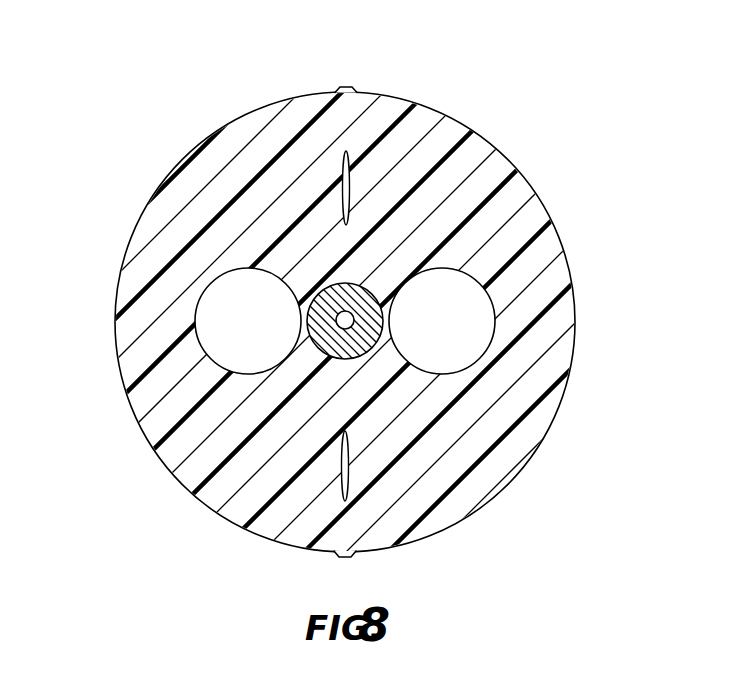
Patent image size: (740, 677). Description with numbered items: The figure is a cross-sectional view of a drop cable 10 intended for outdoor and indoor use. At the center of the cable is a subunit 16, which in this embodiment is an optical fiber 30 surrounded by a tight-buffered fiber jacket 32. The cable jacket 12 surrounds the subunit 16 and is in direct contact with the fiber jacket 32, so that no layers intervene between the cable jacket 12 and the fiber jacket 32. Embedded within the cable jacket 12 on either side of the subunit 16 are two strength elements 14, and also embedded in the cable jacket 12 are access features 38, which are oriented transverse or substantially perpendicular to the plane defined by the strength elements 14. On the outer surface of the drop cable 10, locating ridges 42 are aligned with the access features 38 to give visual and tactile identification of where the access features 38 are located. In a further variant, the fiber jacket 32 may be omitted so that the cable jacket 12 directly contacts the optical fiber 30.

The drop cable 10 is at (370, 338).
The cable jacket 12 is at (448, 130).
The strength elements 14 is at (210, 313).
The subunit 16 is at (370, 338).
The optical fiber 30 is at (353, 320).
The fiber jacket 32 is at (367, 340).
The access features 38 is at (345, 168).
The locating ridges 42 is at (347, 84).